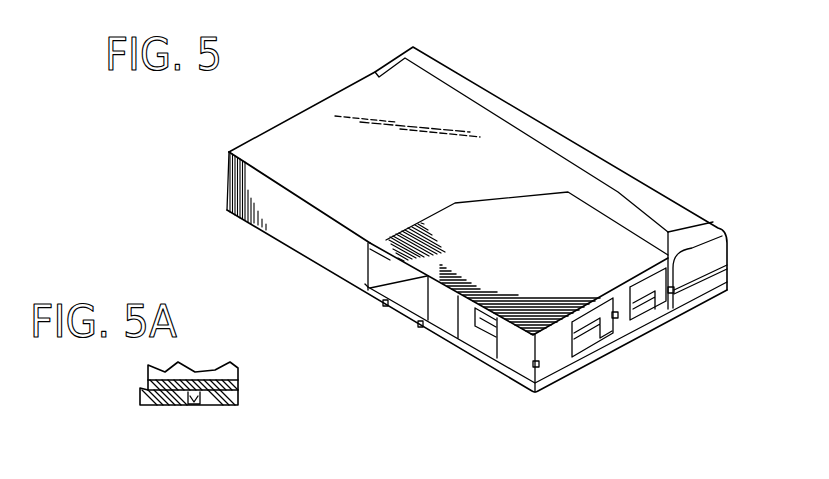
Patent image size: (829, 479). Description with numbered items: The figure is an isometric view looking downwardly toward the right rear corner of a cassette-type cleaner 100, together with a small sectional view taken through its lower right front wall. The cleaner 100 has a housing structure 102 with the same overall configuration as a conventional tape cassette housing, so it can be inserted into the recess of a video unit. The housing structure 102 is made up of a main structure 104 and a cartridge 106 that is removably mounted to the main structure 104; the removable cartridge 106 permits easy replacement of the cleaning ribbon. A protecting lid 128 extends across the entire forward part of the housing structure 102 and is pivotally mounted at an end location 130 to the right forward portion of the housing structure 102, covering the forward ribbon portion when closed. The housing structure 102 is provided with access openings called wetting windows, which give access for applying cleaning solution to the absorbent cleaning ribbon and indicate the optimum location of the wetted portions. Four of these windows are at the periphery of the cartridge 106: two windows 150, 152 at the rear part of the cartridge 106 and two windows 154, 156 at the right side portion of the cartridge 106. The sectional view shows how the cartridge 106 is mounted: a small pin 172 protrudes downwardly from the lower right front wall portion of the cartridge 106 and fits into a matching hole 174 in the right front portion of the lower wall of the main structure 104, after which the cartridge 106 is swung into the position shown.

In FIG. 5, the cassette-type cleaner 100 is at (326, 278).
In FIG. 5, the housing structure 102 is at (306, 232).
In FIG. 5, the main structure 104 is at (258, 215).
In FIG. 5, the cartridge 106 is at (516, 363).
In FIG. 5, the protecting lid 128 is at (660, 190).
In FIG. 5, the end location 130 is at (688, 268).
In FIG. 5, the wetting window 150 is at (417, 296).
In FIG. 5, the wetting window 152 is at (483, 339).
In FIG. 5, the wetting window 154 is at (592, 344).
In FIG. 5, the wetting window 156 is at (644, 314).
In FIG. 5A, the pin 172 is at (208, 406).
In FIG. 5A, the hole 174 is at (192, 408).